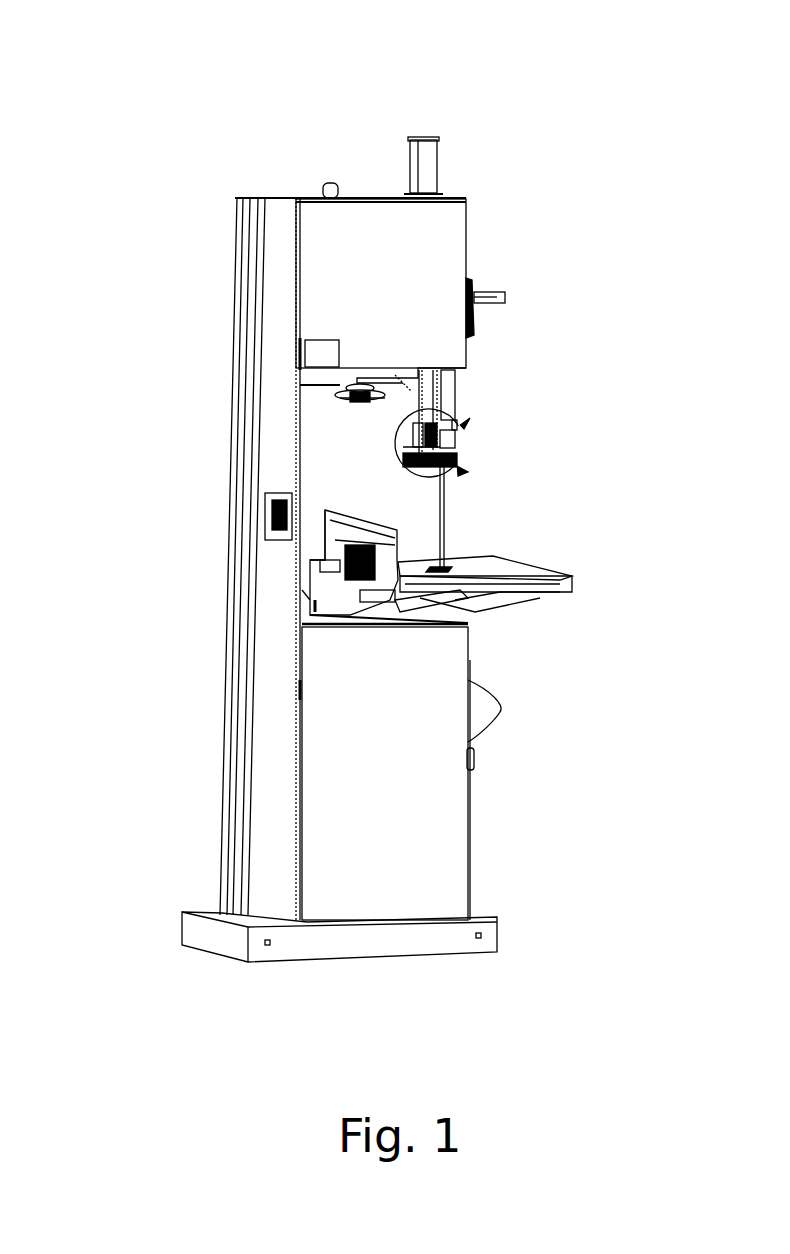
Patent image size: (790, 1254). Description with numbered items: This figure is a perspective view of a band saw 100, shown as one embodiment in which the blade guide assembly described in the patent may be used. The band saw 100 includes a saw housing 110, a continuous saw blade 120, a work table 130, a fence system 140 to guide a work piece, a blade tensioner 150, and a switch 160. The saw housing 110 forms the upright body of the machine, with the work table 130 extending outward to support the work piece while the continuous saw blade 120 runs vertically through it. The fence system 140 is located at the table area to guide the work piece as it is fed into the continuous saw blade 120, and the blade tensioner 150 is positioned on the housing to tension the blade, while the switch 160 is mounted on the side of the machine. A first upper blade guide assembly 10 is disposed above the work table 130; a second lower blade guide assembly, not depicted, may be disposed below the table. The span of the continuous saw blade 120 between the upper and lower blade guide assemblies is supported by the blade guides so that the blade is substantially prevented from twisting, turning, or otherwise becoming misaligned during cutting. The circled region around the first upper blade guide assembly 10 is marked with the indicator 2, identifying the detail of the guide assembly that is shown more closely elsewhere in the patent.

The band saw 100 is at (517, 133).
The saw housing 110 is at (418, 283).
The continuous saw blade 120 is at (447, 503).
The work table 130 is at (533, 568).
The fence system 140 is at (327, 573).
The blade tensioner 150 is at (343, 385).
The switch 160 is at (265, 520).
The first upper blade guide assembly 10 is at (413, 450).
The detail view indicator for FIG. 2 is at (439, 443).